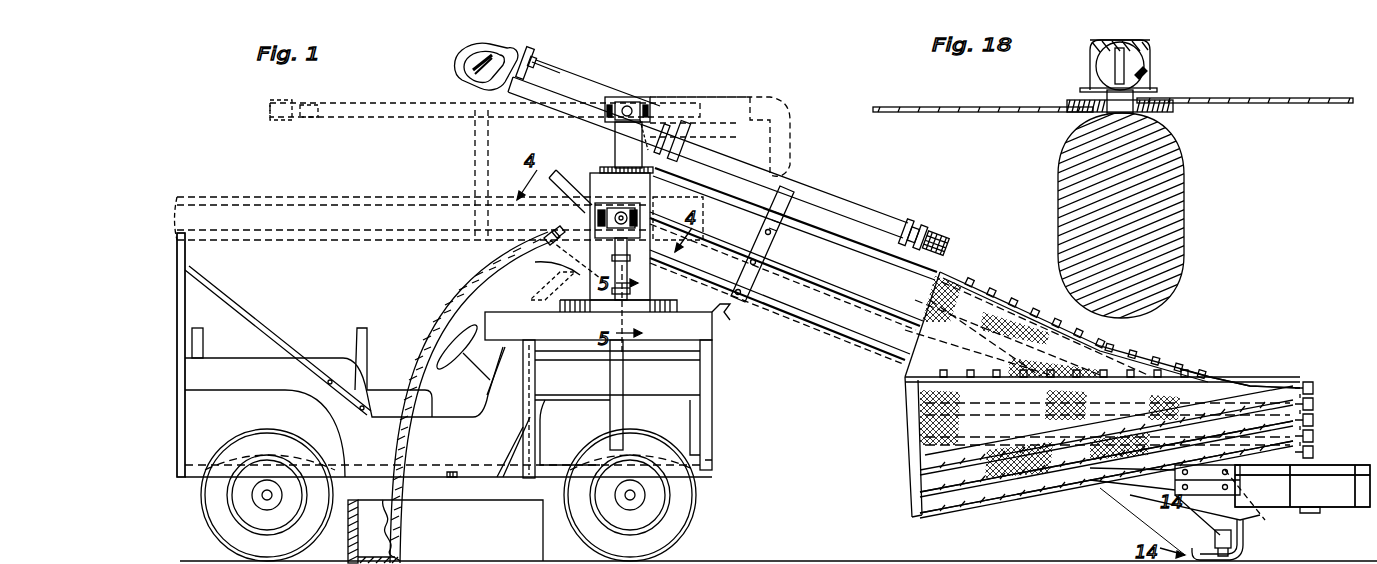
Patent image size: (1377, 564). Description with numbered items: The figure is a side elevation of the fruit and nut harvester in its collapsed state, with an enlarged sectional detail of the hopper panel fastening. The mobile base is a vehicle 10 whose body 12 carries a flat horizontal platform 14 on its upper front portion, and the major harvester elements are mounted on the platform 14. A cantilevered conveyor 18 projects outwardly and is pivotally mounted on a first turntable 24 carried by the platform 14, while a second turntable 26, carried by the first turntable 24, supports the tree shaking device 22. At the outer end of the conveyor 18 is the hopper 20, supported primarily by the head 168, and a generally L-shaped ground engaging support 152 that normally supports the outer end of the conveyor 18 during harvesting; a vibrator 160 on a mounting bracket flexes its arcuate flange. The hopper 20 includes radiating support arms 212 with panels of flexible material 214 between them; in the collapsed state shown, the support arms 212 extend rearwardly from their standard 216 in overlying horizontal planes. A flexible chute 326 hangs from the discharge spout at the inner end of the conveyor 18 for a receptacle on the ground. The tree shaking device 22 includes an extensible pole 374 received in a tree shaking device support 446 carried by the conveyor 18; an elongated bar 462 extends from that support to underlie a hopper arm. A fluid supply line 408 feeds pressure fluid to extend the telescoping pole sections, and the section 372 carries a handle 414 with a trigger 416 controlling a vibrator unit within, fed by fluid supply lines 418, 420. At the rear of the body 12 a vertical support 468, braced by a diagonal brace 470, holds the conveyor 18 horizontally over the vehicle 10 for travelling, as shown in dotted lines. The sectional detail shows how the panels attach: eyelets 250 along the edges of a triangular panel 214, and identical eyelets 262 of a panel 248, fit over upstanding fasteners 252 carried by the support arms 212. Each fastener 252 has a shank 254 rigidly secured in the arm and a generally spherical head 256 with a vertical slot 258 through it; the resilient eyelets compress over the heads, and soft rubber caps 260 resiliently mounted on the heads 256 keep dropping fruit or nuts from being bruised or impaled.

In FIG. 1, the vehicle 10 is at (716, 426).
In FIG. 1, the body 12 is at (432, 470).
In FIG. 1, the platform 14 is at (616, 320).
In FIG. 1, the conveyor 18 is at (847, 340).
In FIG. 1, the hopper 20 is at (1195, 368).
In FIG. 1, the tree shaking device 22 is at (702, 95).
In FIG. 1, the first turntable 24 is at (580, 250).
In FIG. 1, the second turntable 26 is at (612, 140).
In FIG. 1, the ground engaging support 152 is at (1248, 541).
In FIG. 1, the vibrator 160 is at (1215, 544).
In FIG. 1, the head 168 is at (1335, 463).
In FIG. 1, the support arms 212 is at (900, 383).
In FIG. 18, the support arms 212 is at (1185, 207).
In FIG. 1, the panels of flexible material 214 is at (972, 482).
In FIG. 18, the panels of flexible material 214 is at (977, 112).
In FIG. 1, the standard 216 is at (1305, 382).
In FIG. 18, the panel 248 is at (1235, 98).
In FIG. 18, the eyelets 250 is at (1078, 110).
In FIG. 18, the fasteners 252 is at (1145, 70).
In FIG. 18, the shank 254 is at (1125, 103).
In FIG. 18, the spherical head 256 is at (1094, 66).
In FIG. 18, the vertical slot 258 is at (1132, 42).
In FIG. 18, the caps 260 is at (1115, 42).
In FIG. 18, the eyelets 262 is at (1160, 96).
In FIG. 1, the flexible chute 326 is at (440, 318).
In FIG. 1, the section 372 is at (545, 72).
In FIG. 1, the extensible pole 374 is at (901, 219).
In FIG. 1, the fluid supply line 408 is at (680, 156).
In FIG. 1, the handle 414 is at (492, 50).
In FIG. 1, the trigger 416 is at (462, 70).
In FIG. 1, the fluid supply line 418 is at (532, 52).
In FIG. 1, the fluid supply line 420 is at (526, 65).
In FIG. 1, the tree shaking device support 446 is at (778, 240).
In FIG. 1, the elongated bar 462 is at (875, 254).
In FIG. 1, the support 468 is at (185, 258).
In FIG. 1, the diagonal brace 470 is at (238, 308).